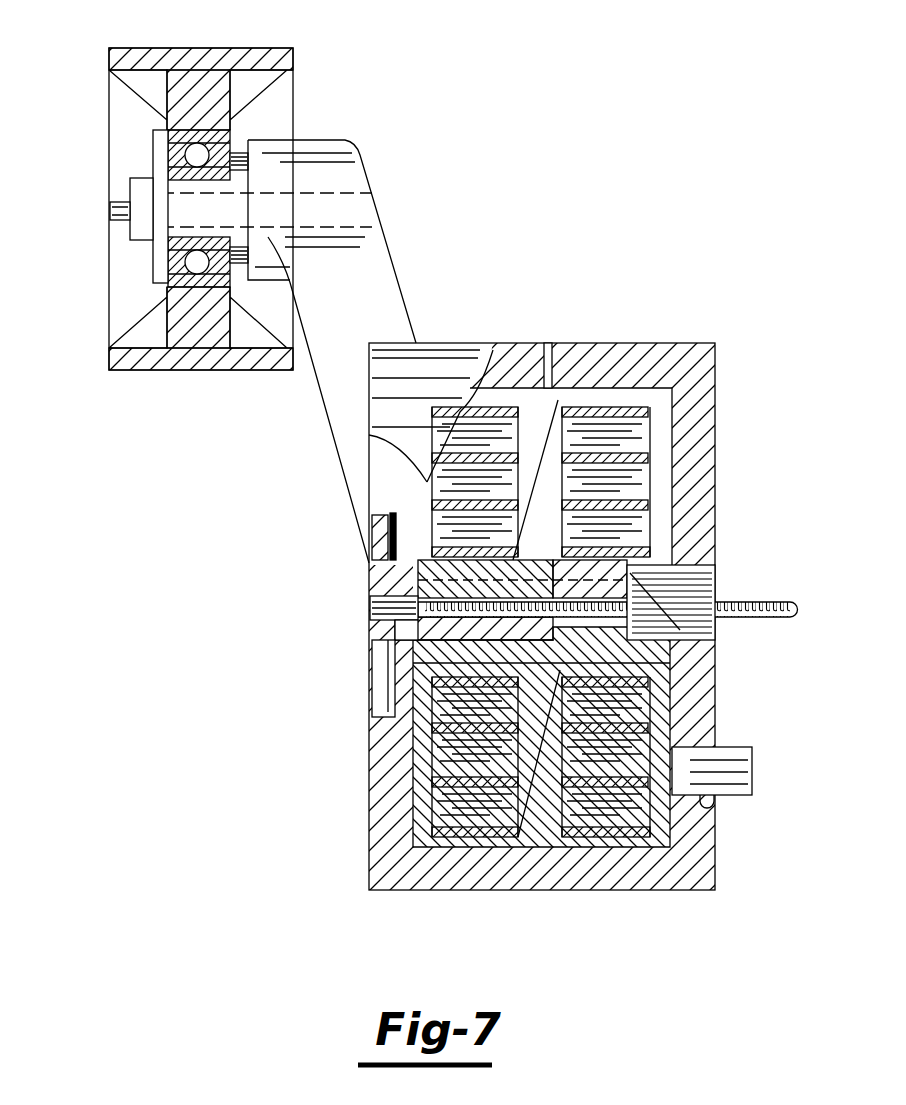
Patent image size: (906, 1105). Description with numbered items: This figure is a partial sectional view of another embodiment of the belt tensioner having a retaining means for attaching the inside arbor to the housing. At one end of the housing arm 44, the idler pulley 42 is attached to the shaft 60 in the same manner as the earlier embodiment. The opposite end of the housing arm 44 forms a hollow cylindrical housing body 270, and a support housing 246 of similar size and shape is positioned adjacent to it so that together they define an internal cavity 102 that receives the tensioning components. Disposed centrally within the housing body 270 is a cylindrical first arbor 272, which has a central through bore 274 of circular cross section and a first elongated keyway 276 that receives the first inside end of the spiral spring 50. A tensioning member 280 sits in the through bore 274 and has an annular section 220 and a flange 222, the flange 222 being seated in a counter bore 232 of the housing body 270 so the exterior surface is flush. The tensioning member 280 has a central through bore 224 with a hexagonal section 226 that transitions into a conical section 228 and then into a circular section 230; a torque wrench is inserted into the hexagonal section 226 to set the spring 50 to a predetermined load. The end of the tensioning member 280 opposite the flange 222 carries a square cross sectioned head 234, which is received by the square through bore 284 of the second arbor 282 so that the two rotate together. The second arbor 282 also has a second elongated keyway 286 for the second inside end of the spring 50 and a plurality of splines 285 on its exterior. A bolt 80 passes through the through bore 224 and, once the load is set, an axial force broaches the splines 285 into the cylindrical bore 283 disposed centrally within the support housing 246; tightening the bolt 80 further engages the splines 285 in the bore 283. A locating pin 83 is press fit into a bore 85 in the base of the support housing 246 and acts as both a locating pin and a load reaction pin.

The idler pulley 42 is at (291, 50).
The housing arm 44 is at (360, 270).
The shaft 60 is at (177, 207).
The spiral spring 50 is at (633, 407).
The internal cavity 102 is at (533, 400).
The support housing 246 is at (705, 370).
The circular section 230 is at (505, 548).
The first elongated keyway 276 is at (470, 560).
The counter bore 232 is at (400, 525).
The central through bore 274 is at (395, 555).
The central through bore 224 is at (450, 585).
The hexagonal section 226 is at (373, 612).
The conical section 228 is at (395, 622).
The tensioning member 280 is at (395, 685).
The flange 222 is at (375, 690).
The first arbor 272 is at (440, 728).
The annular section 220 is at (470, 745).
The housing body 270 is at (378, 867).
The second elongated keyway 286 is at (605, 545).
The cylindrical bore 283 is at (700, 550).
The splines 285 is at (715, 587).
The bolt 80 is at (797, 610).
The head 234 is at (722, 640).
The second arbor 282 is at (690, 645).
The through bore 284 is at (680, 665).
The locating pin 83 is at (740, 770).
The bore 85 is at (715, 810).